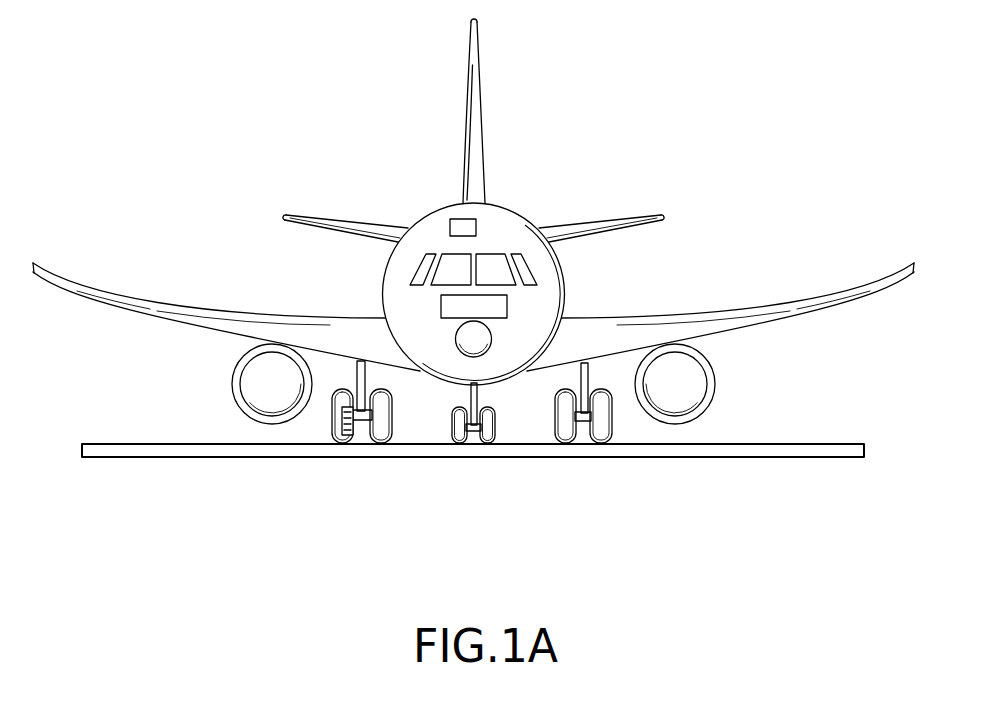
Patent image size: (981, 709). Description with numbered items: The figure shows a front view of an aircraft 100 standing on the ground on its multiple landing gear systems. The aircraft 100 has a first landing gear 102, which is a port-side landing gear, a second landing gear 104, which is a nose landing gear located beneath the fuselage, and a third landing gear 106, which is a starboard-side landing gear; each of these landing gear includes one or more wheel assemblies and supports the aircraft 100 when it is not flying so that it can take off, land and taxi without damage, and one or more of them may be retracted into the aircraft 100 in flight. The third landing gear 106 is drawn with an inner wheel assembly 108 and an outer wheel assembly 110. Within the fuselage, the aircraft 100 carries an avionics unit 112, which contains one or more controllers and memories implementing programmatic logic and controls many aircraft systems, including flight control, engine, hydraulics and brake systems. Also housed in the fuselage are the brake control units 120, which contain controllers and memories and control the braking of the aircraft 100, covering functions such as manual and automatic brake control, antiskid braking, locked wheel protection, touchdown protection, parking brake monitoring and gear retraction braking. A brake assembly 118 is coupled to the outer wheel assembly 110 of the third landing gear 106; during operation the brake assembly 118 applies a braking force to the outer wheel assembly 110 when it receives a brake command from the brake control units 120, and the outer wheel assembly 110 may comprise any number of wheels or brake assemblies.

The aircraft 100 is at (324, 63).
The first landing gear 102 is at (626, 440).
The second landing gear 104 is at (499, 445).
The third landing gear 106 is at (351, 475).
The inner wheel assembly 108 is at (387, 447).
The outer wheel assembly 110 is at (345, 444).
The avionics unit 112 is at (482, 224).
The brake assembly 118 is at (345, 446).
The brake control units (BCUs) 120 is at (507, 312).